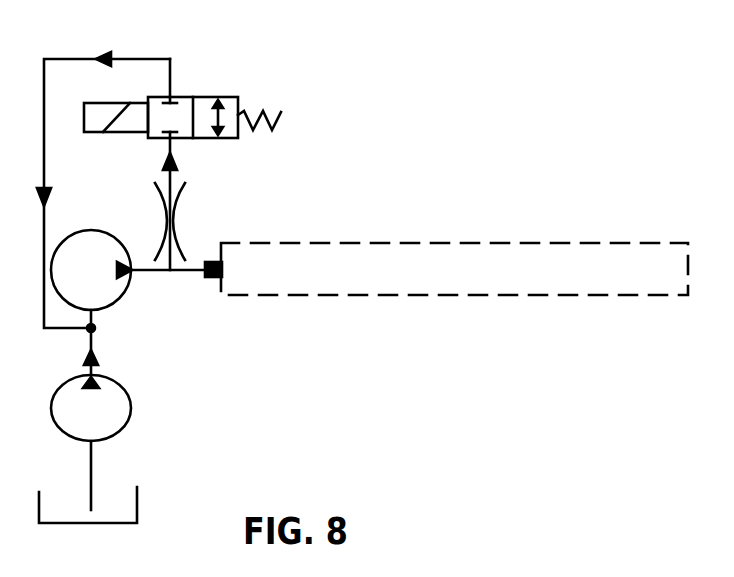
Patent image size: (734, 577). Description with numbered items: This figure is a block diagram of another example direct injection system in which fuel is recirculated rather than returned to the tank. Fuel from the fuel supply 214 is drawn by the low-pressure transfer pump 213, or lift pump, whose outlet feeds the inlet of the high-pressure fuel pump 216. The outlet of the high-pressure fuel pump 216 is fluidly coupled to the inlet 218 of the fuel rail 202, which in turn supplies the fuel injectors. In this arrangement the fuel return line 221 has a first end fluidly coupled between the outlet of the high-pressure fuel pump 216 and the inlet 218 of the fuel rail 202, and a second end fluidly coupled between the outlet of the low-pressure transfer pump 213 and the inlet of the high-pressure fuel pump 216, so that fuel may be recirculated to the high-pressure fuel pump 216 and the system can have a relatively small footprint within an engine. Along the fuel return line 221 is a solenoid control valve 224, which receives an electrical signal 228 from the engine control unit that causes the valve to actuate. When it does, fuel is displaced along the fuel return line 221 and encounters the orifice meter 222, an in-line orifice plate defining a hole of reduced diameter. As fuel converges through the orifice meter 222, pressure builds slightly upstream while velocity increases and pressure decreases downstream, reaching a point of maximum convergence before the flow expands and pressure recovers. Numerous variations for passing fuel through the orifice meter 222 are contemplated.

The fuel rail 202 is at (472, 292).
The low-pressure transfer pump 213 is at (127, 395).
The fuel supply 214 is at (137, 493).
The high-pressure fuel pump 216 is at (88, 230).
The inlet 218 is at (215, 258).
The fuel return line 221 is at (47, 46).
The orifice meter 222 is at (183, 190).
The solenoid control valve 224 is at (202, 95).
The electrical signal 228 is at (282, 118).